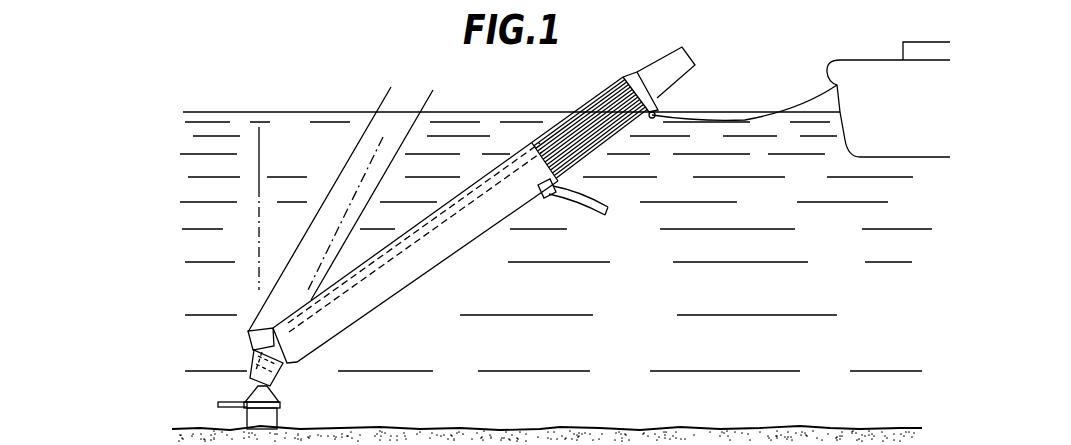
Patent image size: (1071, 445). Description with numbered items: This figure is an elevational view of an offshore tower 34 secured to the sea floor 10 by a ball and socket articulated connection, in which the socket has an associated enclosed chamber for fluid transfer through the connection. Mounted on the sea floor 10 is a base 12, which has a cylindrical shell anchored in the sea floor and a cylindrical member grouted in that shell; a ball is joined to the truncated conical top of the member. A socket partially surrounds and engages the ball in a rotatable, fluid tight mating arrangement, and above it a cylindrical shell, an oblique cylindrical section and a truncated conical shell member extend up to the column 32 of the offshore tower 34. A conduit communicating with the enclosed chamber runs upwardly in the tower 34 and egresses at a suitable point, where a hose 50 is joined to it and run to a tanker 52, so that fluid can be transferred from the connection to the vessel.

The sea floor 10 is at (553, 427).
The base 12 is at (290, 412).
The column 32 is at (388, 299).
The offshore tower 34 is at (362, 168).
The hose 50 is at (587, 212).
The tanker 52 is at (861, 70).